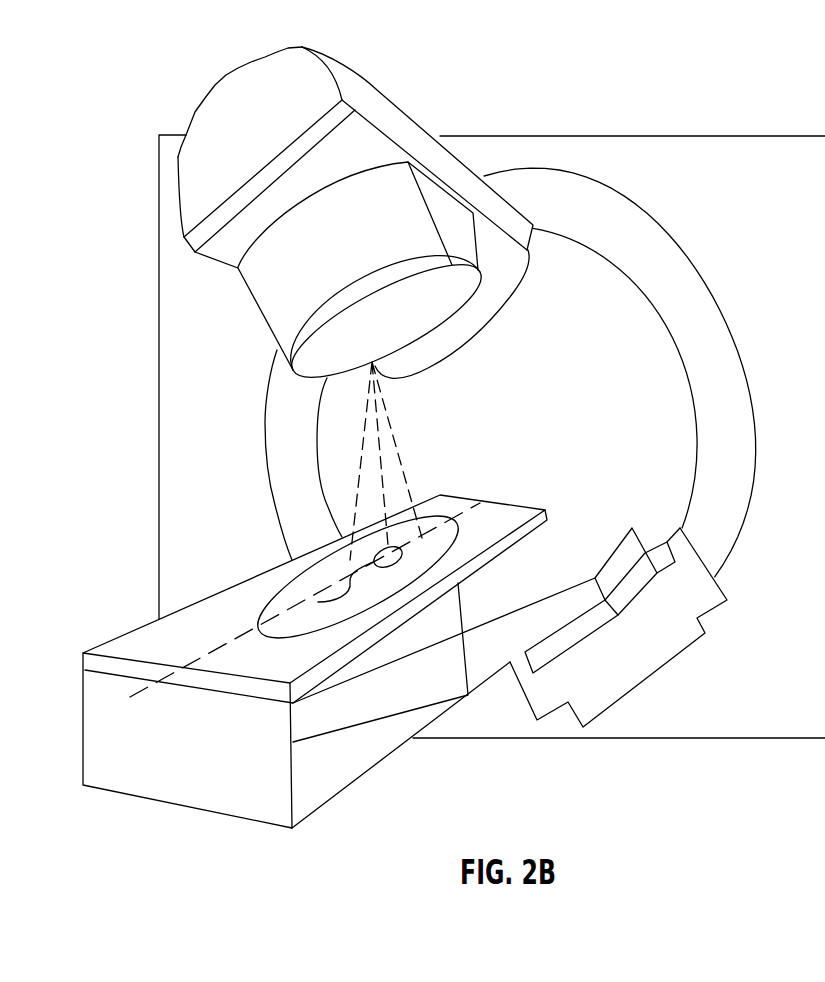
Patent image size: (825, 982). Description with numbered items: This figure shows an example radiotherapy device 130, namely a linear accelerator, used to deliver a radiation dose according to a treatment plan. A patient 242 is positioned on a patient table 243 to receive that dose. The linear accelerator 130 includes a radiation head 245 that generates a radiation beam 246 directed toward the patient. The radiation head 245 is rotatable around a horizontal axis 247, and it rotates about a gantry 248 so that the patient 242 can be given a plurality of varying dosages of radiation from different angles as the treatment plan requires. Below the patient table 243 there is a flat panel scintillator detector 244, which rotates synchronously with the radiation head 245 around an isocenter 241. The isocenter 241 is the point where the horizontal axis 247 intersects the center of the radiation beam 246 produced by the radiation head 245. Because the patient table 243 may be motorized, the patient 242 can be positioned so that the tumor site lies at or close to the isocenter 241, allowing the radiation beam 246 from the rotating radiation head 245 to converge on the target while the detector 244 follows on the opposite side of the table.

The radiotherapy device 130 is at (657, 86).
The isocenter 241 is at (357, 576).
The patient 242 is at (293, 596).
The patient table 243 is at (512, 508).
The flat panel scintillator detector 244 is at (594, 557).
The radiation head 245 is at (264, 318).
The radiation beam 246 is at (395, 441).
The horizontal axis 247 is at (183, 665).
The gantry 248 is at (673, 238).